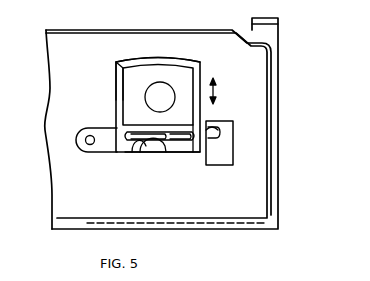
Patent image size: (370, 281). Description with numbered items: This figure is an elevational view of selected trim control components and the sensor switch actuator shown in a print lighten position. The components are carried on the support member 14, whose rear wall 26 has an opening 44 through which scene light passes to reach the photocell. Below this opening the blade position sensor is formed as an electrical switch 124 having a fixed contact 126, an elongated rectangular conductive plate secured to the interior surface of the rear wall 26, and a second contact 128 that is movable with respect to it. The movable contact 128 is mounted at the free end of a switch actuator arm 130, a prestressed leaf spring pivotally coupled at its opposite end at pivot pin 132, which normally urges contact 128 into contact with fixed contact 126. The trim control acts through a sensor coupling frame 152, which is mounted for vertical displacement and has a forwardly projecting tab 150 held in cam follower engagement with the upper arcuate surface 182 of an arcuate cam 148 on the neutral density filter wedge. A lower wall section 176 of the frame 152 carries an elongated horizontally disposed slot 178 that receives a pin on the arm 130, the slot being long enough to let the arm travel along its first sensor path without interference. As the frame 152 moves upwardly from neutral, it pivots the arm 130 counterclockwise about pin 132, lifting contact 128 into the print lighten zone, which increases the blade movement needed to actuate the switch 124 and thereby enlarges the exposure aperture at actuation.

The support member 14 is at (284, 226).
The rear wall 26 is at (183, 52).
The opening 44 is at (160, 96).
The electrical switch 124 is at (236, 149).
The fixed contact 126 is at (221, 121).
The second contact 128 is at (214, 140).
The switch actuator arm 130 is at (105, 128).
The pivot pin 132 is at (87, 144).
The arcuate cam 148 is at (145, 152).
The tab 150 is at (140, 127).
The sensor coupling frame 152 is at (117, 70).
The lower wall section 176 is at (192, 144).
The slot 178 is at (155, 145).
The upper arcuate surface 182 is at (135, 147).